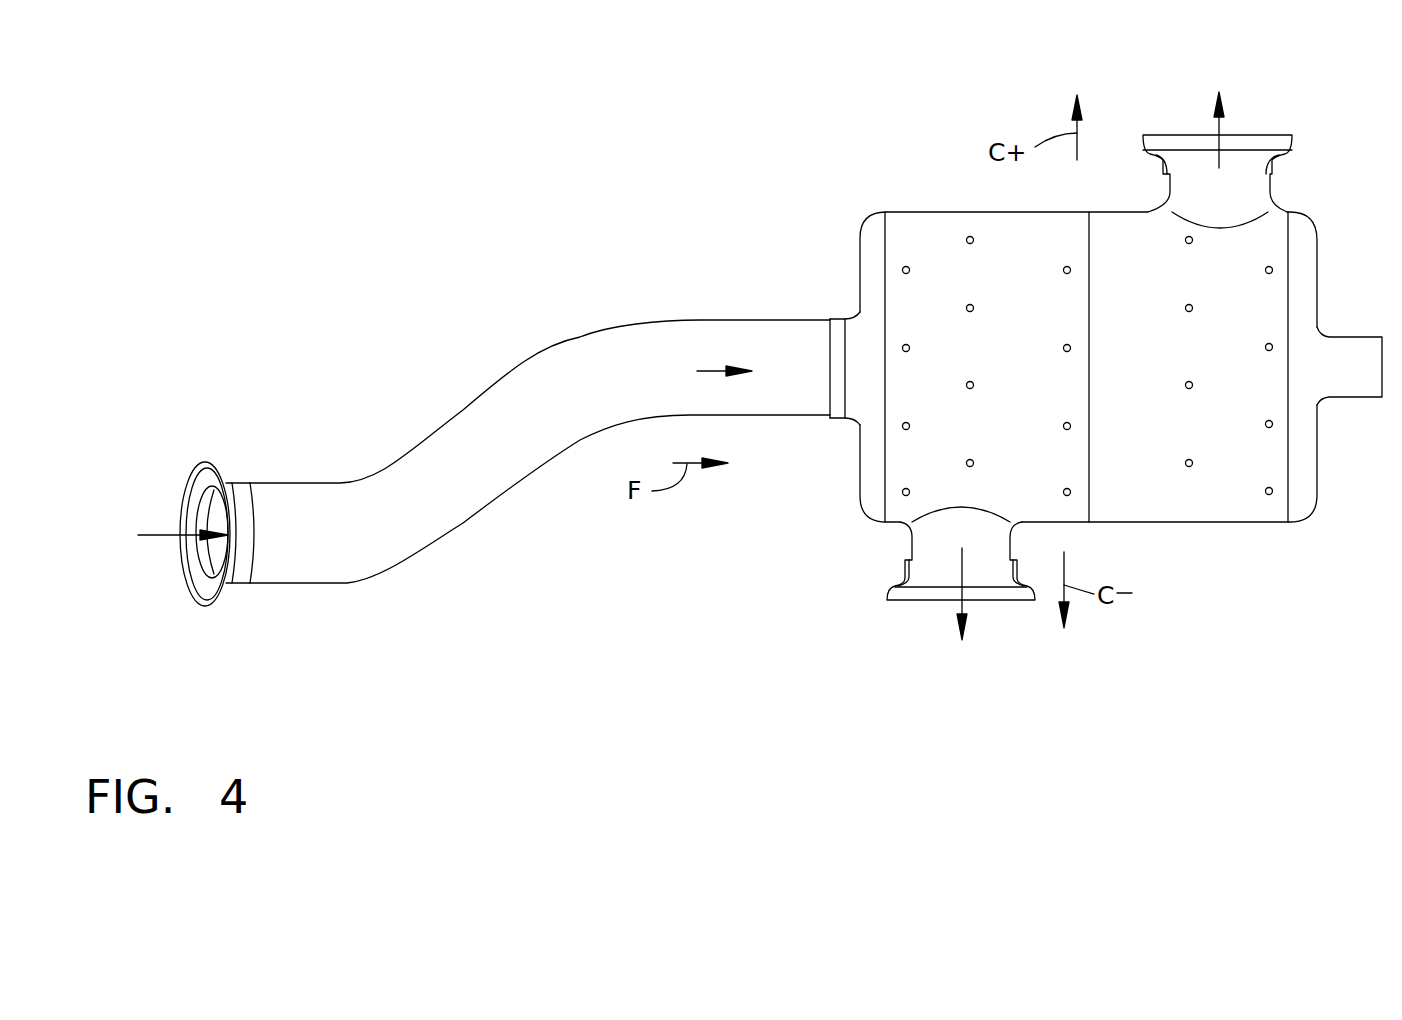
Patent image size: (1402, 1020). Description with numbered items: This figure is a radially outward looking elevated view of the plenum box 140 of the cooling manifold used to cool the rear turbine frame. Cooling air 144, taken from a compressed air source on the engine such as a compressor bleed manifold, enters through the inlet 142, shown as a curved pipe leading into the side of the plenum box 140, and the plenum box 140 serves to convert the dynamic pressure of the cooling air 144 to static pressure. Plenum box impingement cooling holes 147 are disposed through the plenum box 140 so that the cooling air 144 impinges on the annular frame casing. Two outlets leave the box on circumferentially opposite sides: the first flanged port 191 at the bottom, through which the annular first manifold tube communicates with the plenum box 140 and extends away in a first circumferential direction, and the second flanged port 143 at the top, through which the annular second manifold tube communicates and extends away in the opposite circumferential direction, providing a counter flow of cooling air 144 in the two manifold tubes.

The plenum box 140 is at (930, 212).
The inlet 142 is at (245, 483).
The second flanged port 143 is at (1200, 140).
The cooling air 144 is at (160, 537).
The plenum box impingement cooling holes 147 is at (1070, 345).
The first flanged port 191 is at (905, 580).